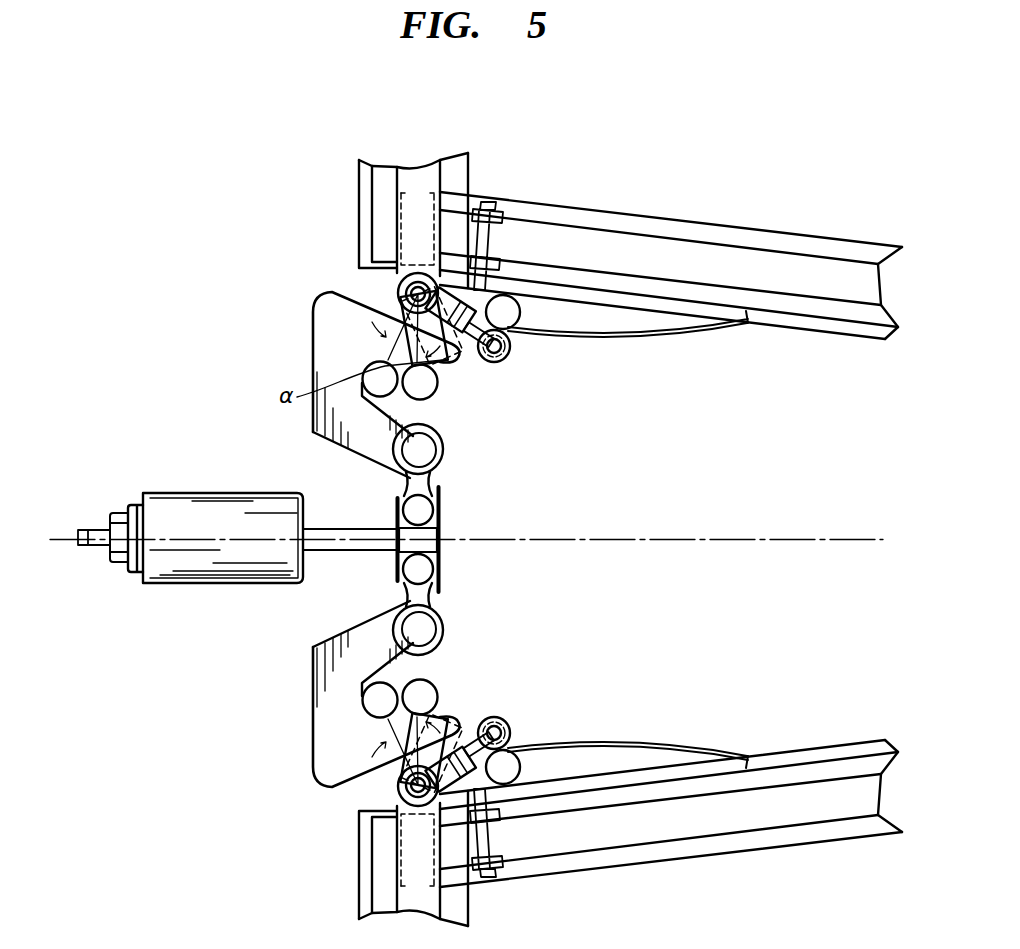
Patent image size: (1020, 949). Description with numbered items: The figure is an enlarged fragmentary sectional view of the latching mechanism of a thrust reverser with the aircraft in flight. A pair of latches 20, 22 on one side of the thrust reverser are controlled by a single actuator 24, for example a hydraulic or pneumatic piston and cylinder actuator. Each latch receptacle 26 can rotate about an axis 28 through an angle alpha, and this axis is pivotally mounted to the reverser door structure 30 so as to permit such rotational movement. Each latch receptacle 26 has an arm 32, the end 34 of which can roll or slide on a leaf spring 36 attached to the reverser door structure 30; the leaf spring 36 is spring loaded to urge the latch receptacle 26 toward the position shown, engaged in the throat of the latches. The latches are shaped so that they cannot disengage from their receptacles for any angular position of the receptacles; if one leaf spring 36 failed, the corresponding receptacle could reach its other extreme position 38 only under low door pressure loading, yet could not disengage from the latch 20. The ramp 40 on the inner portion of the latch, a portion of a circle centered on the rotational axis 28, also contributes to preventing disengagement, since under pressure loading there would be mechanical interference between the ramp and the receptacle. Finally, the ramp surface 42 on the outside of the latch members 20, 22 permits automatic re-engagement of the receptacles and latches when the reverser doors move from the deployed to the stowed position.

The latch 20 is at (313, 343).
The latch 22 is at (313, 735).
The actuator 24 is at (220, 583).
The latch receptacle 26 is at (395, 300).
The axis 28 is at (416, 294).
The reverser door structure 30 is at (397, 217).
The arm 32 is at (448, 338).
The end 34 is at (508, 347).
The leaf spring 36 is at (630, 338).
The other extreme position 38 is at (431, 396).
The ramp 40 is at (437, 713).
The ramp surface 42 is at (430, 780).